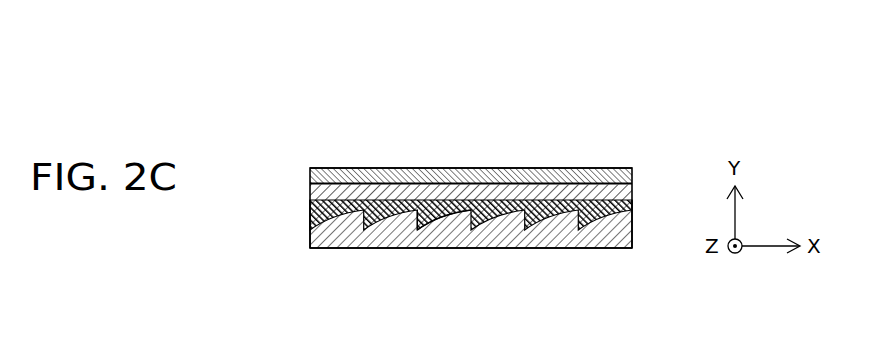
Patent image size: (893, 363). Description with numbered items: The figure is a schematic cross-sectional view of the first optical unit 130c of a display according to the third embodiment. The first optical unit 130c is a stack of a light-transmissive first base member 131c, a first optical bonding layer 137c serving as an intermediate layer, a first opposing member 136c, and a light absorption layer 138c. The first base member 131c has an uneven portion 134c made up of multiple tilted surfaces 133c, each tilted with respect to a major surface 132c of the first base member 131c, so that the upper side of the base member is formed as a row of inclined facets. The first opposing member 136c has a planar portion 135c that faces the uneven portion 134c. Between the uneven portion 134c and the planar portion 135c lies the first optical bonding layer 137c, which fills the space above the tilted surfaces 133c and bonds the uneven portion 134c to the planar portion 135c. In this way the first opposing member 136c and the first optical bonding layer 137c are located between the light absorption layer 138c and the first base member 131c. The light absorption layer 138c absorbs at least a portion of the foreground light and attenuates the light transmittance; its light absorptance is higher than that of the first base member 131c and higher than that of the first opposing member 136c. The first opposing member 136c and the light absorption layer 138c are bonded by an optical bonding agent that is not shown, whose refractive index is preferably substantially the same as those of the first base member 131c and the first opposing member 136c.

The first optical unit 130c is at (360, 90).
The first base member 131c is at (560, 228).
The major surface 132c is at (500, 248).
The tilted surfaces 133c is at (428, 228).
The uneven portion 134c is at (448, 224).
The planar portion 135c is at (512, 197).
The first opposing member 136c is at (592, 199).
The first optical bonding layer 137c is at (309, 212).
The light absorption layer 138c is at (362, 168).